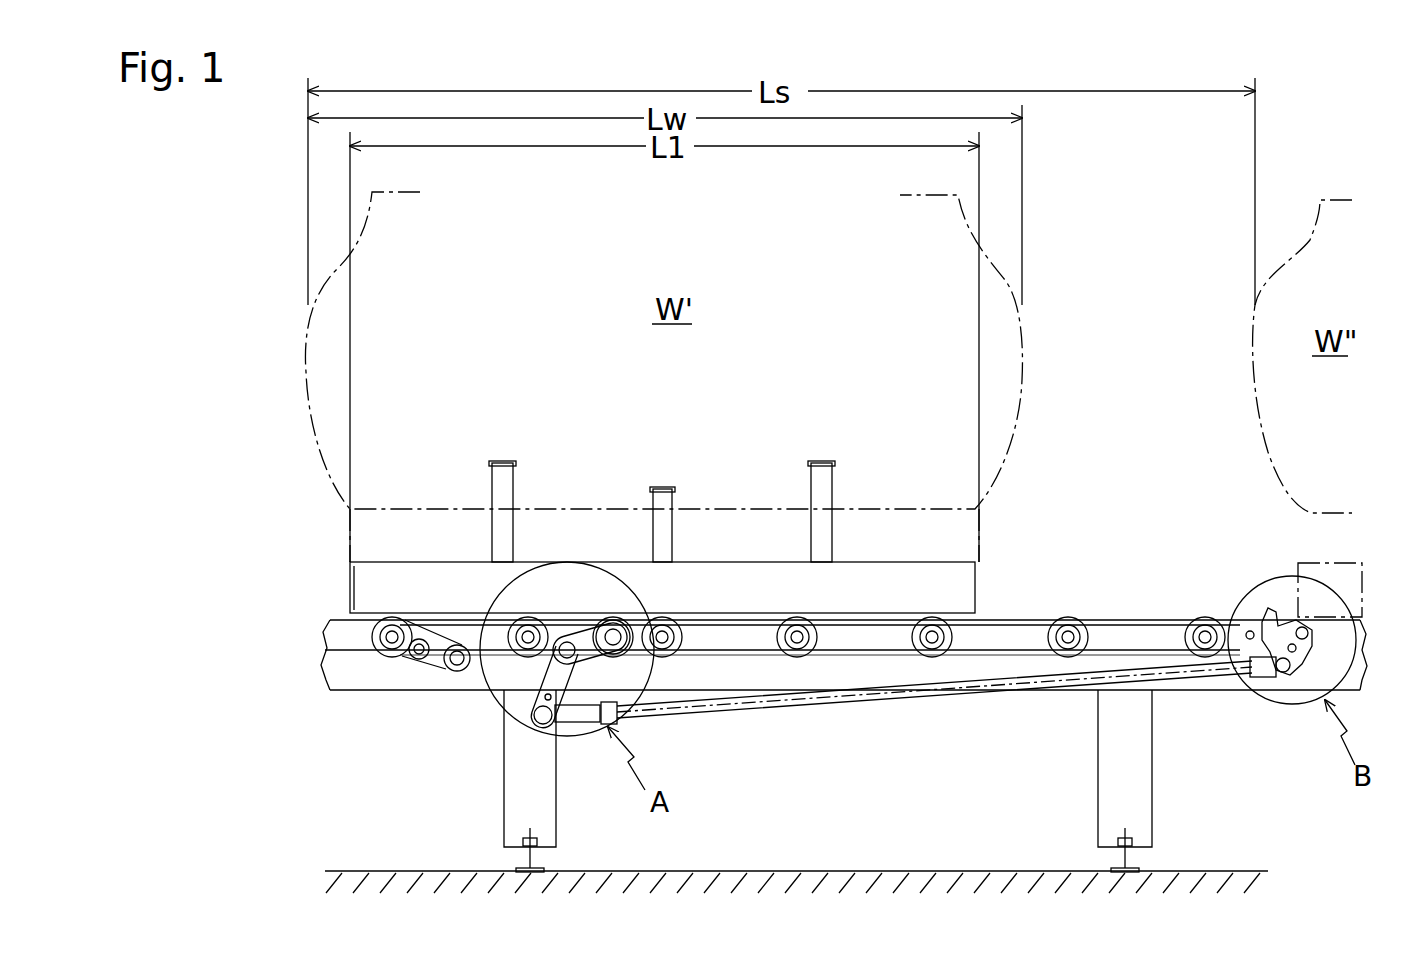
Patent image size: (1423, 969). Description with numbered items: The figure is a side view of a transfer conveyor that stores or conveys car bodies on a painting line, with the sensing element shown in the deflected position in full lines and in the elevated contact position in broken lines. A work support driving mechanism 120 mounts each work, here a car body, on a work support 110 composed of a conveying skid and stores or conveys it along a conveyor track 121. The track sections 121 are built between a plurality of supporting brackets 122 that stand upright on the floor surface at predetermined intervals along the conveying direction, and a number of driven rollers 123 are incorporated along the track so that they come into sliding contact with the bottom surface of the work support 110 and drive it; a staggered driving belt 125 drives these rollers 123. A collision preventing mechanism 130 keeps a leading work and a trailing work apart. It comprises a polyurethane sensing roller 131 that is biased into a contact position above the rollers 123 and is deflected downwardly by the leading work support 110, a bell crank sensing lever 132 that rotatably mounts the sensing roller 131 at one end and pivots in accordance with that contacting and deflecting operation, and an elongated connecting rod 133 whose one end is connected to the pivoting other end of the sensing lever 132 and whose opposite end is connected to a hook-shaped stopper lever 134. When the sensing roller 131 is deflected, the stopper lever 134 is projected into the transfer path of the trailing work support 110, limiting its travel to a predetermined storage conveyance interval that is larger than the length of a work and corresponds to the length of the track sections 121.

The work support 110 is at (955, 553).
The work support driving mechanism 120 is at (338, 612).
The conveyor track 121 is at (372, 678).
The supporting bracket 122 is at (518, 795).
The driven roller 123 is at (397, 618).
The staggered driving belt 125 is at (1007, 632).
The collision preventing mechanism 130 is at (930, 707).
The sensing roller 131 is at (630, 613).
The bell crank sensing lever 132 is at (642, 652).
The connecting rod 133 is at (818, 700).
The stopper lever 134 is at (1312, 646).